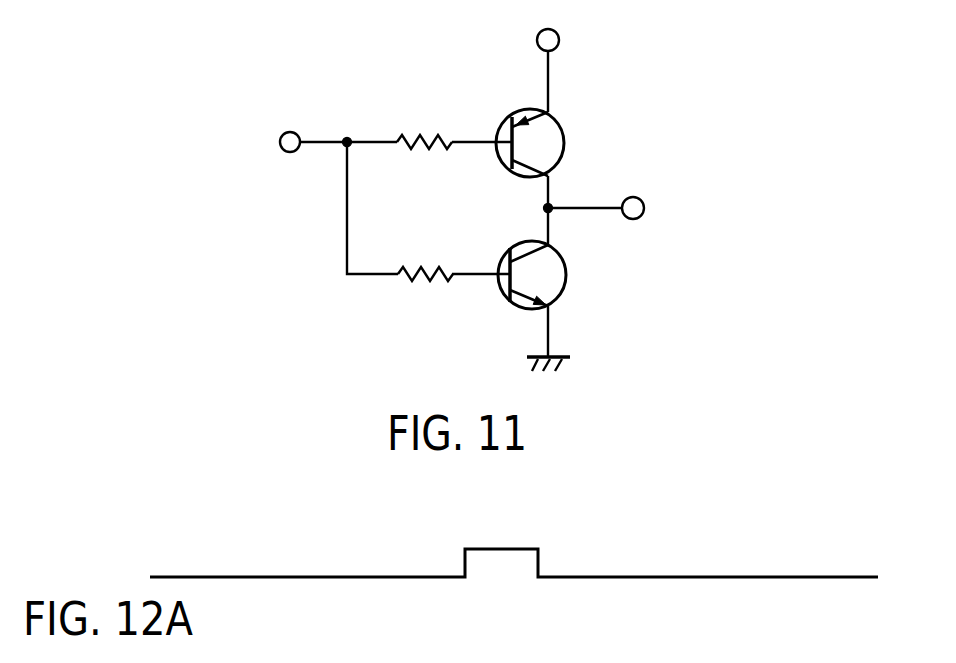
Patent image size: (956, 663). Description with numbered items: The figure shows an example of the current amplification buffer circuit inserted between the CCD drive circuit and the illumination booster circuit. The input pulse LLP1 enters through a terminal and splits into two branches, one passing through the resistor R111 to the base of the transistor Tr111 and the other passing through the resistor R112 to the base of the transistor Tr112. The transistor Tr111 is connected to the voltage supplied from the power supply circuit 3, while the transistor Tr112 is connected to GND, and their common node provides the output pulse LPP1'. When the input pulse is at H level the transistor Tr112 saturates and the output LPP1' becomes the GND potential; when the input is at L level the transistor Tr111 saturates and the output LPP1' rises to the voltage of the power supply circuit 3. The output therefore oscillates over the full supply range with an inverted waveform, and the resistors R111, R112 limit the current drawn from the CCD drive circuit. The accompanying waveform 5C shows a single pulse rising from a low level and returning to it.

In FIG. 11, the resistor R111 is at (418, 133).
In FIG. 11, the resistor R112 is at (400, 284).
In FIG. 11, the transistor Tr111 is at (565, 143).
In FIG. 11, the transistor Tr112 is at (566, 275).
In FIG. 11, the input pulse LLP1 is at (257, 142).
In FIG. 11, the output pulse LPP1' is at (631, 208).
In FIG. 11, the power supply circuit 3 is at (665, 51).
In FIG. 12A, the pulse waveform 5C is at (220, 574).